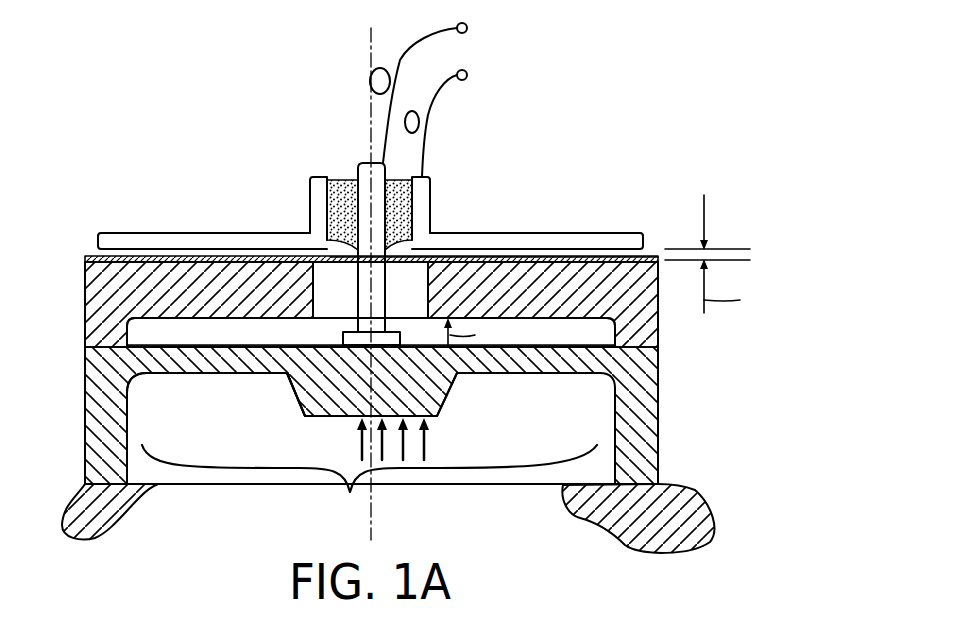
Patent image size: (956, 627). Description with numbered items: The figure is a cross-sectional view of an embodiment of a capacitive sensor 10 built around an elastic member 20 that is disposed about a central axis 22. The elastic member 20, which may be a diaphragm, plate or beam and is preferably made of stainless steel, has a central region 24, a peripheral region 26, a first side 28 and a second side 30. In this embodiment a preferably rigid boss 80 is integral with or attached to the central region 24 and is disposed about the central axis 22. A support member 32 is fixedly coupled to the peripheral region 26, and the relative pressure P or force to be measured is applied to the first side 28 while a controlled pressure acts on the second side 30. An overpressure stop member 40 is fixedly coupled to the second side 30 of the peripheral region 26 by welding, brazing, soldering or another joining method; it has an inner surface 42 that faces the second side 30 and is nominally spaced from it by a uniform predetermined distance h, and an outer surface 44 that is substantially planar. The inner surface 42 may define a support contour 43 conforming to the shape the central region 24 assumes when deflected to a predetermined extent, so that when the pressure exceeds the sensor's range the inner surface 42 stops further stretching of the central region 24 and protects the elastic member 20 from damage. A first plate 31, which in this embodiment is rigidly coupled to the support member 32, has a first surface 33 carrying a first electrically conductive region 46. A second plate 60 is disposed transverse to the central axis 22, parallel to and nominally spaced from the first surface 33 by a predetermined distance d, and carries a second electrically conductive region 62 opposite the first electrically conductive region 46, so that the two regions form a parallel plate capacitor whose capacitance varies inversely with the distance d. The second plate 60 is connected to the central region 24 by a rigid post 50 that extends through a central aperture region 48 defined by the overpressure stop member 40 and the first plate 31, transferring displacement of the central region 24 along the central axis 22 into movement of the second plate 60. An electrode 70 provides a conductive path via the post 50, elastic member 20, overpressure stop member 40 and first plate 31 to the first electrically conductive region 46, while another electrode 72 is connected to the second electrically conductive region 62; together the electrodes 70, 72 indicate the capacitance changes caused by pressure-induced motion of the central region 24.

The capacitive sensor 10 is at (592, 45).
The elastic member 20 is at (204, 373).
The central axis 22 is at (368, 30).
The central region 24 is at (369, 485).
The peripheral region 26 is at (85, 358).
The first side 28 is at (227, 373).
The second side 30 is at (218, 345).
The first plate 31 is at (239, 257).
The support member 32 is at (97, 440).
The first surface 33 is at (308, 237).
The overpressure stop member 40 is at (85, 291).
The inner surface 42 is at (268, 321).
The support contour 43 is at (165, 330).
The outer surface 44 is at (530, 258).
The first electrically conductive region 46 is at (470, 258).
The central aperture region 48 is at (342, 283).
The rigid post 50 is at (378, 207).
The second plate 60 is at (246, 232).
The second electrically conductive region 62 is at (588, 249).
The electrode 70 is at (388, 122).
The electrode 72 is at (430, 103).
The boss 80 is at (296, 408).